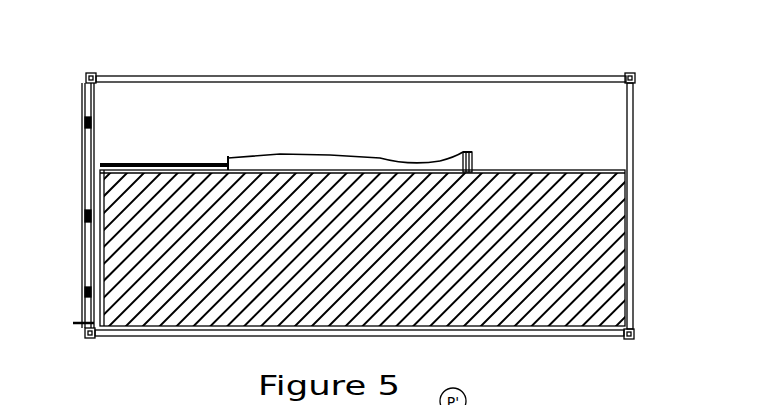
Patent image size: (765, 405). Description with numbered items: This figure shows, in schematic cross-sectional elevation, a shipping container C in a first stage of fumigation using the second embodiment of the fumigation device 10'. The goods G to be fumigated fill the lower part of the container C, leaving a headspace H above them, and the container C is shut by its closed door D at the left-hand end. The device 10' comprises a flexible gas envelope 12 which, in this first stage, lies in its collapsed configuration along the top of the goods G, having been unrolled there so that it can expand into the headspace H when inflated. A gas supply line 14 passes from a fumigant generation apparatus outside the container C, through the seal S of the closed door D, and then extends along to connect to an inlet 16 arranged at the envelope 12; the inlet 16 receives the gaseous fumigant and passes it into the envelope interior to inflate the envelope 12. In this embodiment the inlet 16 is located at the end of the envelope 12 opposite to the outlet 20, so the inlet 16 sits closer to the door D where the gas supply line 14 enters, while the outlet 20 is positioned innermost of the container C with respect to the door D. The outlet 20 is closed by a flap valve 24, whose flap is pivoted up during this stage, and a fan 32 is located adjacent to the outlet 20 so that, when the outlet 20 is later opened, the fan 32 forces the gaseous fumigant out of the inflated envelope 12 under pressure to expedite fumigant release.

The device 10' is at (364, 164).
The gas envelope 12 is at (280, 148).
The gas supply line 14 is at (205, 163).
The inlet 16 is at (227, 158).
The outlet 20 is at (473, 167).
The flap valve 24 is at (469, 153).
The fan 32 is at (464, 154).
The container C is at (200, 74).
The door D is at (80, 143).
The goods G is at (365, 247).
The headspace H is at (143, 105).
The seal S is at (75, 321).